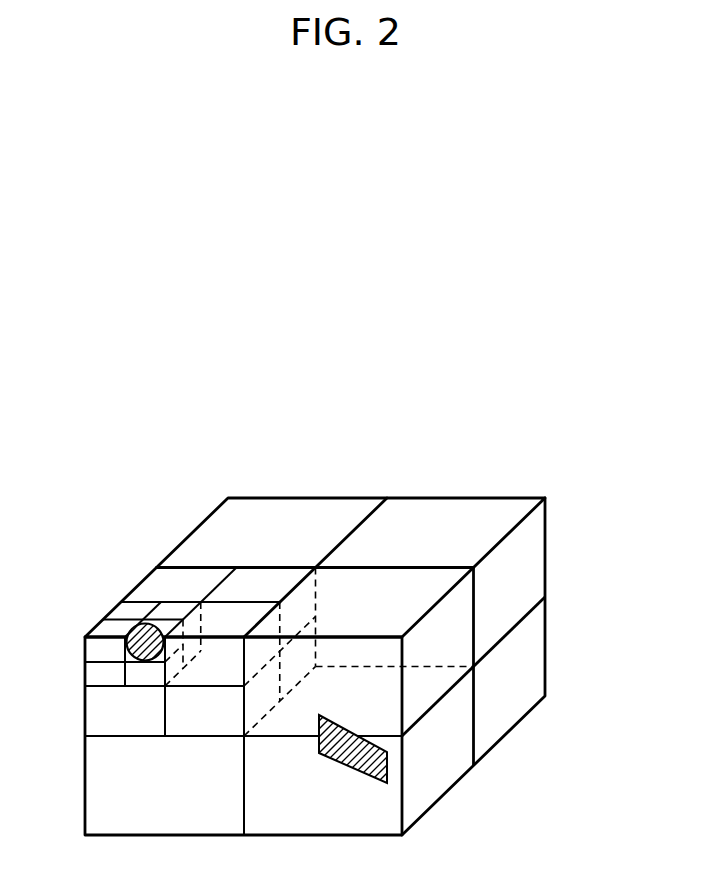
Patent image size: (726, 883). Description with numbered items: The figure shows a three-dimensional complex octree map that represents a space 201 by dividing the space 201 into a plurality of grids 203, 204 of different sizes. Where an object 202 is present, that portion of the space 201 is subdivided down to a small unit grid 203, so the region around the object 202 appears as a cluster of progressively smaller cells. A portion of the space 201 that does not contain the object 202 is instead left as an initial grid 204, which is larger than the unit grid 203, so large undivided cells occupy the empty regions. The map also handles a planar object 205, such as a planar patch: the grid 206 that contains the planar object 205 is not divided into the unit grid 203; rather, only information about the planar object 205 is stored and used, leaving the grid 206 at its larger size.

The space 201 is at (240, 498).
The object 202 is at (145, 622).
The unit grid 203 is at (86, 677).
The initial grid 204 is at (543, 562).
The planar object 205 is at (358, 767).
The grid having the planar object 206 is at (442, 777).